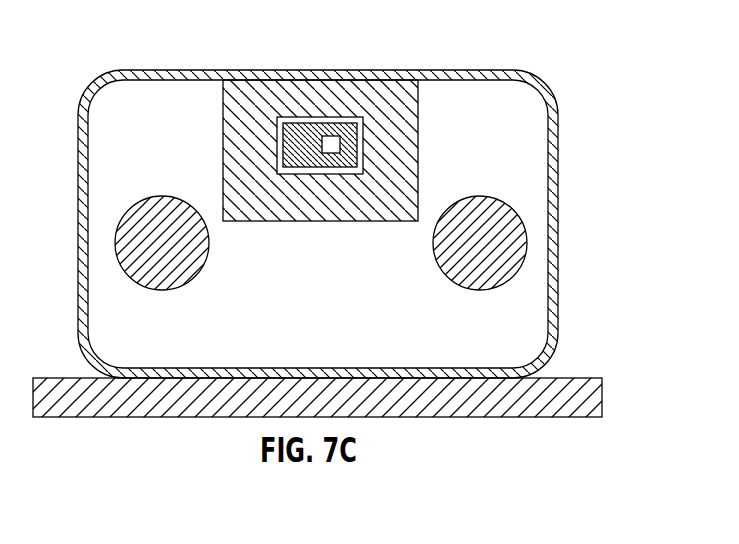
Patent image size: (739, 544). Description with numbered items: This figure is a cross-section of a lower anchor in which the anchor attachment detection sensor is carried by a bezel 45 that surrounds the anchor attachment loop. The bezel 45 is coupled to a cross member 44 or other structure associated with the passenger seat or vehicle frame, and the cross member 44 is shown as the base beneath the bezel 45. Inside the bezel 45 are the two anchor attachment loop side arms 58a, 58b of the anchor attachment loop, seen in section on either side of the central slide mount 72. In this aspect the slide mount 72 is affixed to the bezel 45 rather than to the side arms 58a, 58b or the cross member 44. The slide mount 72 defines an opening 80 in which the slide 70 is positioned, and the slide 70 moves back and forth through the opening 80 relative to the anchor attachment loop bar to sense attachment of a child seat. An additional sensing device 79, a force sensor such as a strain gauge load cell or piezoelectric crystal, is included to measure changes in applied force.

The cross member 44 is at (562, 400).
The bezel 45 is at (490, 71).
The anchor attachment loop side arm 58a is at (162, 195).
The anchor attachment loop side arm 58b is at (481, 195).
The slide 70 is at (288, 158).
The slide mount 72 is at (256, 86).
The additional sensing device 79 is at (341, 148).
The opening 80 is at (320, 117).